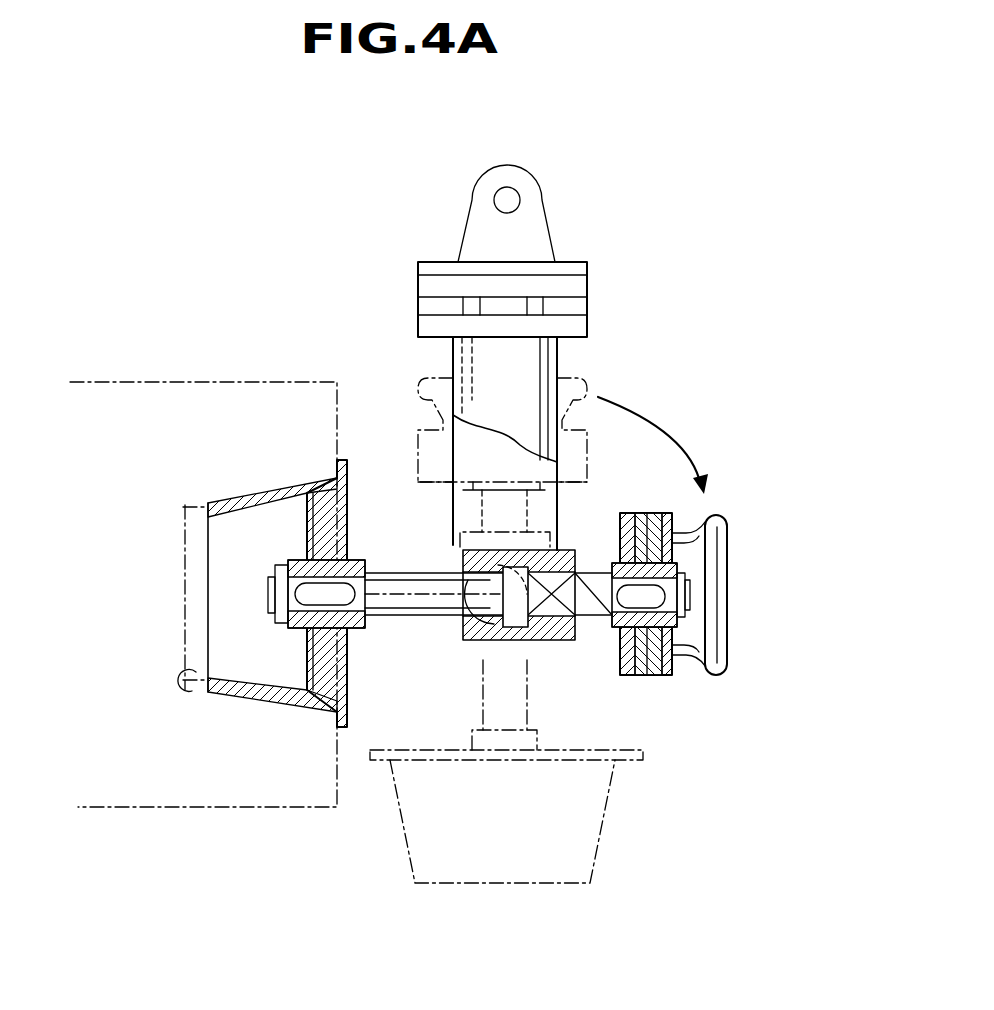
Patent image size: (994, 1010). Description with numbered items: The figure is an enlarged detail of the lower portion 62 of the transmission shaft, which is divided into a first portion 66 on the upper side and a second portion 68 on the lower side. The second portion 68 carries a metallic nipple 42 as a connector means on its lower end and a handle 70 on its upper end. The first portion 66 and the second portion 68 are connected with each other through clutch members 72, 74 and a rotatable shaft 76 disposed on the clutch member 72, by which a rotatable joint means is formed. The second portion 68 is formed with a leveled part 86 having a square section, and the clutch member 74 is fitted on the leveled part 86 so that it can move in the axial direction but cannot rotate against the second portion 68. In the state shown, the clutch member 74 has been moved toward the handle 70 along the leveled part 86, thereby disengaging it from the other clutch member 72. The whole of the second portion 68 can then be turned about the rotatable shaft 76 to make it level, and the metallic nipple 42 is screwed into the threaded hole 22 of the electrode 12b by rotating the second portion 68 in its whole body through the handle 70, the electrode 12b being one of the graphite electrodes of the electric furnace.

The electrode 12b is at (162, 398).
The threaded hole 22 is at (178, 702).
The metallic nipple 42 is at (272, 700).
The lower portion 62 is at (681, 281).
The first portion 66 is at (421, 357).
The second portion 68 is at (409, 648).
The handle 70 is at (582, 392).
The clutch member 72 is at (487, 641).
The clutch member 74 is at (563, 641).
The rotatable shaft 76 is at (445, 580).
The leveled part 86 is at (591, 578).